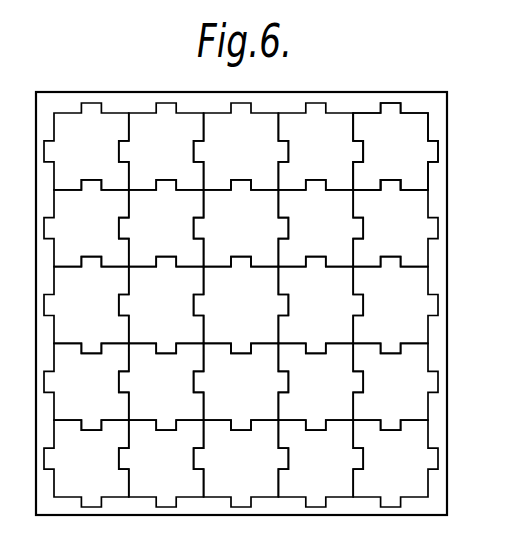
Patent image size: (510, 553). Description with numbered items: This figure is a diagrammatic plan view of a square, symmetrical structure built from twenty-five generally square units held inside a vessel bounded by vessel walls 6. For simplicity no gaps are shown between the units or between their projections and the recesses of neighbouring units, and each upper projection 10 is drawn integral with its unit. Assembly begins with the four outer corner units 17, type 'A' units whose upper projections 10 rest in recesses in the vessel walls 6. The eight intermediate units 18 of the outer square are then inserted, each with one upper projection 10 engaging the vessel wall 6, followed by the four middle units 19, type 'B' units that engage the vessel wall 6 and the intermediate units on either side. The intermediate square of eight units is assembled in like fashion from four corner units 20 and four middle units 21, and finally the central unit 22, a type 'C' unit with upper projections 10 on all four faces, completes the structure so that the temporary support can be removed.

The vessel wall 6 is at (440, 195).
The upper projection 10 is at (438, 151).
The outer corner unit 17 is at (76, 164).
The intermediate unit 18 is at (151, 164).
The middle unit 19 is at (226, 164).
The corner unit 20 is at (151, 241).
The middle unit 21 is at (226, 241).
The central unit 22 is at (226, 318).